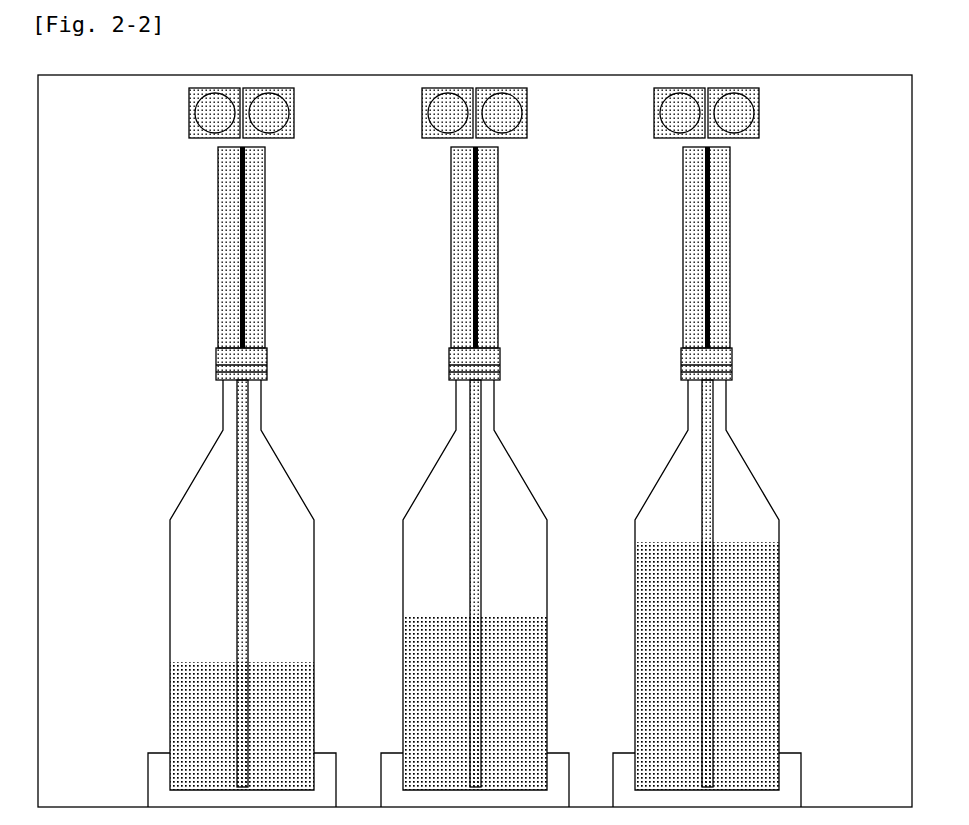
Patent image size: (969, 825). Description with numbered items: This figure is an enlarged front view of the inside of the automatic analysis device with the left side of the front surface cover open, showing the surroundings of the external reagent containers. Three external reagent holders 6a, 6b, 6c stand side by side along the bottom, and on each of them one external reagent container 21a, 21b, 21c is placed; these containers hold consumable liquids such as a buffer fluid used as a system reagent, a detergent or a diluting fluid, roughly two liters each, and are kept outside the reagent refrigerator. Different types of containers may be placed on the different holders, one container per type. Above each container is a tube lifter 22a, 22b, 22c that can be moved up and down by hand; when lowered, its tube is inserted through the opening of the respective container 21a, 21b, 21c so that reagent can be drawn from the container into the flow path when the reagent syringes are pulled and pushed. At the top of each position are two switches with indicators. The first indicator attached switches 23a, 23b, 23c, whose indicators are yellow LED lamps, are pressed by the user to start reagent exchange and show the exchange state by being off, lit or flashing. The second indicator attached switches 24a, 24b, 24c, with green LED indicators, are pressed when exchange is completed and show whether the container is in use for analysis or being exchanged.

The external reagent container 21a is at (187, 512).
The external reagent container 21b is at (423, 508).
The external reagent container 21c is at (648, 510).
The tube lifter 22a is at (218, 367).
The tube lifter 22b is at (450, 367).
The tube lifter 22c is at (682, 367).
The first indicator attached switch 23a is at (189, 118).
The first indicator attached switch 23b is at (422, 118).
The first indicator attached switch 23c is at (654, 120).
The second indicator attached switch 24a is at (292, 128).
The second indicator attached switch 24b is at (525, 128).
The second indicator attached switch 24c is at (756, 128).
The external reagent holder 6a is at (168, 753).
The external reagent holder 6b is at (401, 753).
The external reagent holder 6c is at (634, 753).